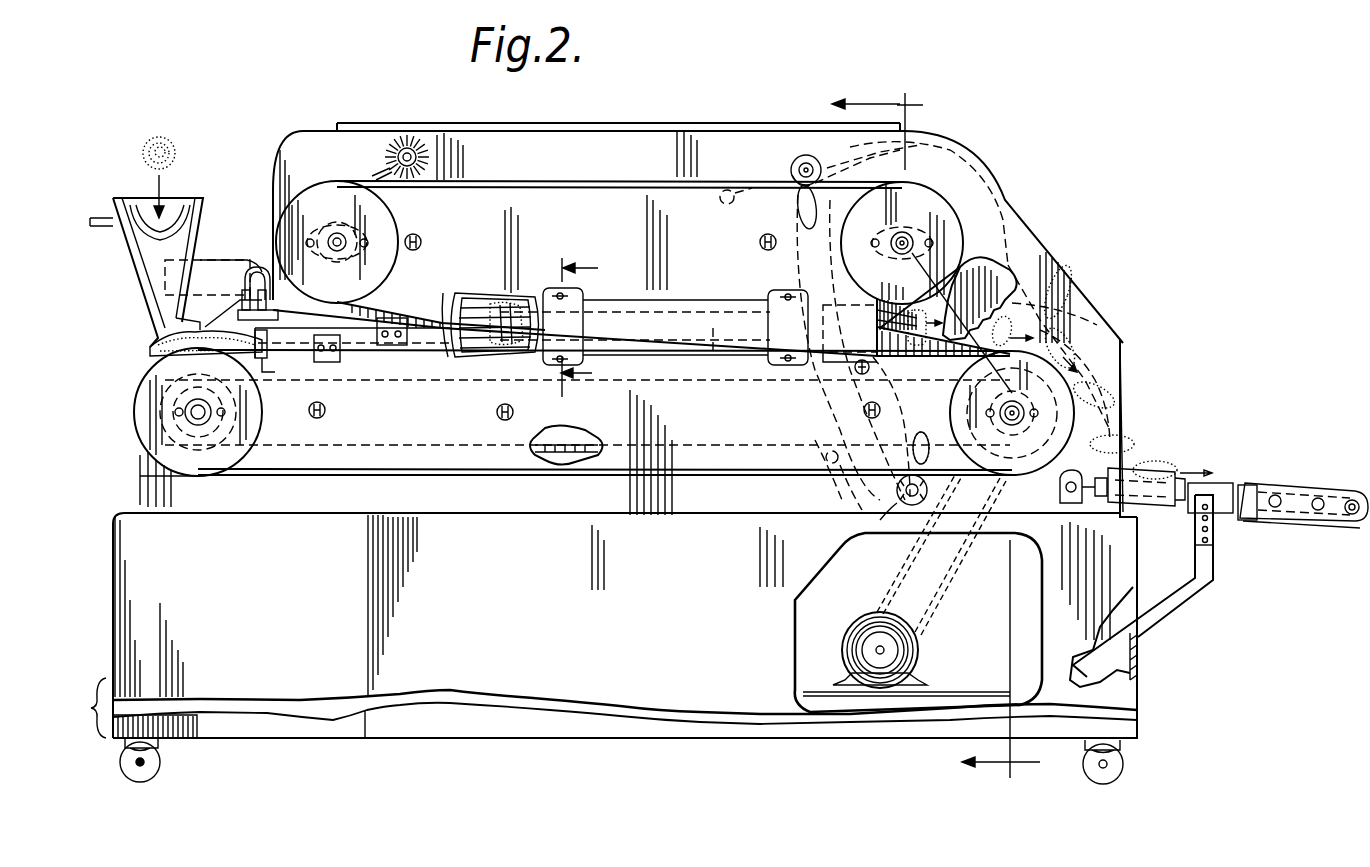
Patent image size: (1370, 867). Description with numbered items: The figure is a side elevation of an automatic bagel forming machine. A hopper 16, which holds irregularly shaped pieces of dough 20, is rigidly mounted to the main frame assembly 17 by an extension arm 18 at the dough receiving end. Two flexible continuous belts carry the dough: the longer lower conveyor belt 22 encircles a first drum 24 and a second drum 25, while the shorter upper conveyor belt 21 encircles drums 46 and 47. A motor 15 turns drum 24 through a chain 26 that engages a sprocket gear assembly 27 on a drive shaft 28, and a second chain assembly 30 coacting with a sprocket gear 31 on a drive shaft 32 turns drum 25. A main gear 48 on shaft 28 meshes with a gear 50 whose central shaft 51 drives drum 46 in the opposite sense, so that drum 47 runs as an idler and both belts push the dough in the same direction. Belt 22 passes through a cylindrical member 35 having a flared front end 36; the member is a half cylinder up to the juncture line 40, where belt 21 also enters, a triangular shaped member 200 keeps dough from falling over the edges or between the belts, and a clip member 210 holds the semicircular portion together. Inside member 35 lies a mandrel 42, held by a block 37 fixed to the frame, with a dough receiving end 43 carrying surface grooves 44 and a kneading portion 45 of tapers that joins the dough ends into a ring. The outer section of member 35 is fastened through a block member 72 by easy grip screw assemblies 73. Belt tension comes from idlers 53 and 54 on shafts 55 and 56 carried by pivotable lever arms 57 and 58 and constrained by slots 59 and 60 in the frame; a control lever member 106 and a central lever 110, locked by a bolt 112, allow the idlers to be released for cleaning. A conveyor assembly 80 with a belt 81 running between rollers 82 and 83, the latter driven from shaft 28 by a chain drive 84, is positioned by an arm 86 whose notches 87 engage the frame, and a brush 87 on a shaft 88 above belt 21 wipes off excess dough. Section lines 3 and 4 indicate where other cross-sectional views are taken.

The motor 15 is at (920, 655).
The hopper 16 is at (199, 200).
The main frame assembly 17 is at (283, 288).
The extension arm 18 is at (207, 265).
The pieces of dough 20 is at (172, 143).
The upper conveyor belt 21 is at (412, 298).
The lower conveyor belt 22 is at (208, 356).
The first drum 24 is at (1108, 331).
The second drum 25 is at (203, 458).
The chain 26 is at (895, 568).
The sprocket gear assembly 27 is at (1122, 381).
The drive shaft 28 is at (1008, 410).
The second chain assembly 30 is at (547, 457).
The sprocket gear 31 is at (203, 412).
The drive shaft 32 is at (190, 418).
The cylindrical member 35 is at (688, 300).
The flared front end 36 is at (265, 365).
The block 37 is at (266, 266).
The juncture line 40 is at (453, 290).
The mandrel 42 is at (650, 333).
The dough receiving end 43 is at (150, 348).
The surface channels or grooves 44 is at (200, 322).
The kneading portion 45 is at (520, 300).
The drum 46 is at (904, 233).
The drum 47 is at (330, 193).
The main gear 48 is at (1090, 300).
The gear 50 is at (1023, 247).
The central shaft 51 is at (903, 236).
The idler 53 is at (794, 160).
The idler 54 is at (895, 505).
The shaft 55 is at (792, 171).
The shaft 56 is at (895, 492).
The pivotable lever arm 57 is at (747, 203).
The pivotable lever arm 58 is at (830, 520).
The slot 59 is at (841, 197).
The slot 60 is at (920, 440).
The block member 72 is at (548, 293).
The screw assemblies 73 is at (570, 290).
The conveyor assembly 80 is at (1223, 482).
The flexible conveyor belt 81 is at (1294, 485).
The roller 82 is at (1350, 500).
The roller 83 is at (1073, 515).
The chain drive 84 is at (1047, 482).
The arm 86 is at (1177, 616).
The brush / arm notches 87 is at (428, 142).
The shaft 88 is at (404, 137).
The control lever member 106 is at (876, 440).
The central lever 110 is at (830, 380).
The bolt 112 is at (860, 373).
The triangular shaped member 200 is at (392, 352).
The clip member 210 is at (324, 363).
The section line 3 is at (921, 436).
The section line 4 is at (595, 321).